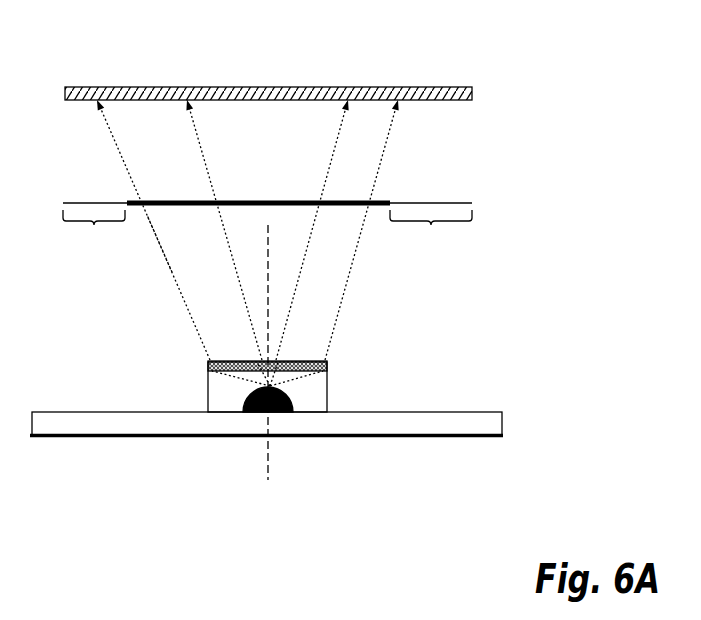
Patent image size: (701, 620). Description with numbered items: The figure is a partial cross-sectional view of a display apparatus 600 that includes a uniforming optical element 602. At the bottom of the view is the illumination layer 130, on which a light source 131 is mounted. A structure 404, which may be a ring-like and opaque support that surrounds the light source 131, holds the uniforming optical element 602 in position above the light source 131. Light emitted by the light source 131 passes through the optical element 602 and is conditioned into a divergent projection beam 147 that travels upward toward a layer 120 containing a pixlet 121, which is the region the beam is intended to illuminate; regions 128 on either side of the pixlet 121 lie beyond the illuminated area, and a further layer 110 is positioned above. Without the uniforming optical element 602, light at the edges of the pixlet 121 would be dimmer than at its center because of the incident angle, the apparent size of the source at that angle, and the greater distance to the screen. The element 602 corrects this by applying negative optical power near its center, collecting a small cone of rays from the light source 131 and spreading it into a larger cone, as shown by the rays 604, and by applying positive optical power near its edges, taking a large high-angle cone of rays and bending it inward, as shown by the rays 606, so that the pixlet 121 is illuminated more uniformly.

The display apparatus 600 is at (513, 70).
The display layer 110 is at (90, 87).
The mask layer 120 is at (470, 203).
The pixlet 121 is at (175, 203).
The transparent region 128 is at (267, 231).
The illumination layer 130 is at (400, 426).
The light source 131 is at (279, 414).
The divergent projection beam 147 is at (177, 254).
The structure 404 is at (327, 396).
The uniforming optical element 602 is at (208, 367).
The rays 604 is at (335, 153).
The rays 606 is at (188, 309).